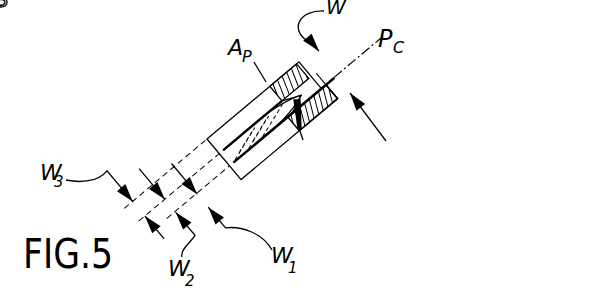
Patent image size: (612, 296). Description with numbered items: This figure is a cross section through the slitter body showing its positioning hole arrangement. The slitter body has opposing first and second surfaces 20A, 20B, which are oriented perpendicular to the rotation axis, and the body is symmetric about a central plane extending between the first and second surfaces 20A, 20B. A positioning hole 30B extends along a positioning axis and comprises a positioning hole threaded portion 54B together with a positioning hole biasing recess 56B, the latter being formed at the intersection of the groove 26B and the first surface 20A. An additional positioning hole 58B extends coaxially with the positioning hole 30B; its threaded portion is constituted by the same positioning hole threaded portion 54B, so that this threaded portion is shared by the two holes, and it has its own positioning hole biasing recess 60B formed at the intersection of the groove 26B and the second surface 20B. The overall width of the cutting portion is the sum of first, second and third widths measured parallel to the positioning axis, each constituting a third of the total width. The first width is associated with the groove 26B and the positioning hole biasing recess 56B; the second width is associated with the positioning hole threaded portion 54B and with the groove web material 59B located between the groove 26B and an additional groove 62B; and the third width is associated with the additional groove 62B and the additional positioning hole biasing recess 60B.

The first surface 20A is at (268, 157).
The second surface 20B is at (194, 128).
The groove 26B is at (249, 181).
The positioning hole 30B is at (302, 137).
The positioning hole threaded portion 54B is at (320, 94).
The positioning hole biasing recess 56B is at (303, 146).
The additional positioning hole 58B is at (262, 118).
The groove web material 59B is at (257, 90).
The positioning hole biasing recess 60B is at (243, 80).
The additional groove 62B is at (242, 110).